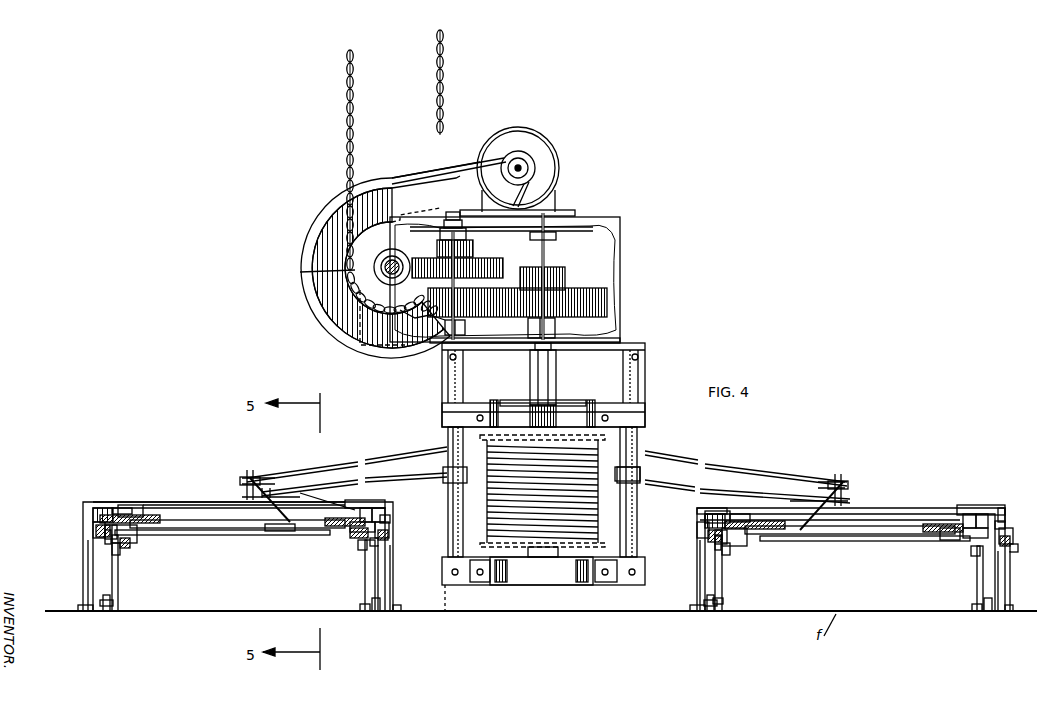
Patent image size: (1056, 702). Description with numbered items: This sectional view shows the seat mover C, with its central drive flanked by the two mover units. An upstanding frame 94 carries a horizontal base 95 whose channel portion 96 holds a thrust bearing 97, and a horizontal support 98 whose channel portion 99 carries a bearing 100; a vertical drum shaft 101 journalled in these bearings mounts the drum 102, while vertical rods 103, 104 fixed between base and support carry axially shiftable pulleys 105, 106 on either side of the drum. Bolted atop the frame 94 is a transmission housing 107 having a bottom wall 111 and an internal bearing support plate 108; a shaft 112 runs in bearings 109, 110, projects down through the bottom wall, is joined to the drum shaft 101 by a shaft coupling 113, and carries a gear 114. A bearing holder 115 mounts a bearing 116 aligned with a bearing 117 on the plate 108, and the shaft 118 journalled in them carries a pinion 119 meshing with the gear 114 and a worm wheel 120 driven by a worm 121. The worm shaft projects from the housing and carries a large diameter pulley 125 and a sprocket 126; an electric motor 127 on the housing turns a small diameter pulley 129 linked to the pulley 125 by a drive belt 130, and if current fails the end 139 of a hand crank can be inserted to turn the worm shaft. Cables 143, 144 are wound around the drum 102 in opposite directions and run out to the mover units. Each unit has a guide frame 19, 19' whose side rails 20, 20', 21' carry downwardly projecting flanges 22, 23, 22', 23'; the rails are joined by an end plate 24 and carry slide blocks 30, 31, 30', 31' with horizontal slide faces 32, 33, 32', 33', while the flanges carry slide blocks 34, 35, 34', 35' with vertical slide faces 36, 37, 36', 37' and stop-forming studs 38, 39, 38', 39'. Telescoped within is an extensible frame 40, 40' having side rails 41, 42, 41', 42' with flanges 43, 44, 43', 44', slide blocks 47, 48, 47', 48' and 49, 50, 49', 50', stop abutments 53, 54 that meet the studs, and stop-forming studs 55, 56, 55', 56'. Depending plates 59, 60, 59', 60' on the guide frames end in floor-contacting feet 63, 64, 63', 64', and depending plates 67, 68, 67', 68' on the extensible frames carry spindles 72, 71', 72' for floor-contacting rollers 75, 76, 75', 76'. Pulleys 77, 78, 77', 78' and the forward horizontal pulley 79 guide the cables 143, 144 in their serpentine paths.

The crank end 139 is at (442, 86).
The drive belt 130 is at (437, 170).
The small diameter pulley 129 is at (524, 160).
The electric motor 127 is at (548, 160).
The large diameter pulley 125 is at (345, 323).
The sprocket 126 is at (300, 272).
The worm 121 is at (392, 256).
The bearing holder 115 is at (400, 312).
The transmission housing 107 is at (612, 270).
The bottom wall 111 is at (612, 332).
The bearing 109 is at (485, 252).
The worm wheel 120 is at (496, 263).
The shaft 112 is at (560, 264).
The gear 114 is at (600, 296).
The bearing 110 is at (556, 327).
The bearing 116 is at (466, 328).
The pinion 119 is at (440, 300).
The bearing support plate 108 is at (552, 234).
The bearing 117 is at (446, 222).
The shaft 118 is at (466, 216).
The upstanding frame 94 is at (647, 376).
The horizontal support 98 is at (610, 425).
The shaft coupling 113 is at (528, 365).
The bearing 100 is at (556, 395).
The drum shaft 101 is at (528, 405).
The channel portion 99 is at (586, 405).
The seat mover C is at (655, 428).
The vertical rod 104 is at (636, 452).
The vertical rod 103 is at (446, 426).
The pulley 105 is at (463, 490).
The pulley 106 is at (640, 488).
The drum 102 is at (583, 513).
The horizontal base 95 is at (520, 585).
The channel portion 96 is at (585, 585).
The thrust bearing 97 is at (560, 562).
The cable 143 is at (400, 455).
The cable 144 is at (424, 478).
The guide frame 19 is at (213, 543).
The depending plate 59 is at (62, 575).
The floor-contacting foot 63 is at (64, 615).
The depending plate 67 is at (130, 573).
The floor-contacting roller 75 is at (115, 610).
The slide block 34 is at (74, 507).
The vertical flange 22 is at (70, 523).
The slide face 36 is at (73, 532).
The stop-forming stud 38 is at (76, 540).
The vertical flange 43 is at (74, 551).
The slide face 32 is at (105, 495).
The slide block 30 is at (130, 496).
The slide block 47 is at (135, 505).
The end plate 24 is at (192, 502).
The side rail 41 is at (237, 532).
The extensible frame 40 is at (222, 536).
The slide block 49 is at (139, 535).
The stop abutment 53 is at (122, 543).
The stop-forming stud 55 is at (131, 558).
The pulley 77 is at (263, 484).
The pulley 78 is at (233, 483).
The forward horizontal pulley 79 is at (268, 530).
The slide block 48 is at (326, 489).
The side rail 20 is at (345, 496).
The side rail 42 is at (329, 531).
The slide block 31 is at (369, 503).
The slide face 33 is at (392, 503).
The slide block 35 is at (399, 513).
The vertical flange 23 is at (396, 527).
The slide face 37 is at (398, 539).
The stop-forming stud 39 is at (394, 549).
The vertical flange 44 is at (398, 578).
The depending plate 60 is at (404, 578).
The floor-contacting foot 64 is at (405, 599).
The stop abutment 54 is at (352, 538).
The slide block 50 is at (327, 543).
The stop-forming stud 56 is at (336, 558).
The depending plate 68 is at (341, 575).
The spindle 72 is at (348, 615).
The floor-contacting roller 76 is at (385, 612).
The guide frame 19' is at (851, 544).
The slide block 30' is at (710, 508).
The side rail 20' is at (689, 516).
The vertical flange 22' is at (680, 530).
The slide block 34' is at (687, 533).
The slide face 36' is at (685, 548).
The stop-forming stud 38' is at (688, 555).
The vertical flange 43' is at (685, 565).
The depending plate 59' is at (674, 575).
The floor-contacting foot 63' is at (678, 615).
The floor-contacting roller 75' is at (717, 610).
The spindle 71' is at (735, 606).
The depending plate 67' is at (747, 573).
The stop-forming stud 55' is at (737, 560).
The slide block 49' is at (751, 551).
The slide block 47' is at (755, 540).
The side rail 41' is at (850, 541).
The extensible frame 40' is at (865, 543).
The slide face 32' is at (743, 500).
The pulley 77' is at (822, 490).
The pulley 78' is at (858, 484).
The side rail 42' is at (923, 537).
The slide block 48' is at (939, 541).
The slide face 33' is at (973, 503).
The slide block 31' is at (988, 503).
The slide face 37' is at (1018, 512).
The side rail 21' is at (1018, 508).
The vertical flange 23' is at (1018, 527).
The slide block 35' is at (1016, 531).
The stop-forming stud 39' is at (1024, 551).
The vertical flange 44' is at (1021, 581).
The depending plate 60' is at (1018, 581).
The floor-contacting foot 64' is at (1021, 599).
The slide block 50' is at (953, 548).
The stop-forming stud 56' is at (950, 564).
The depending plate 68' is at (951, 578).
The spindle 72' is at (957, 615).
The floor-contacting roller 76' is at (1003, 612).